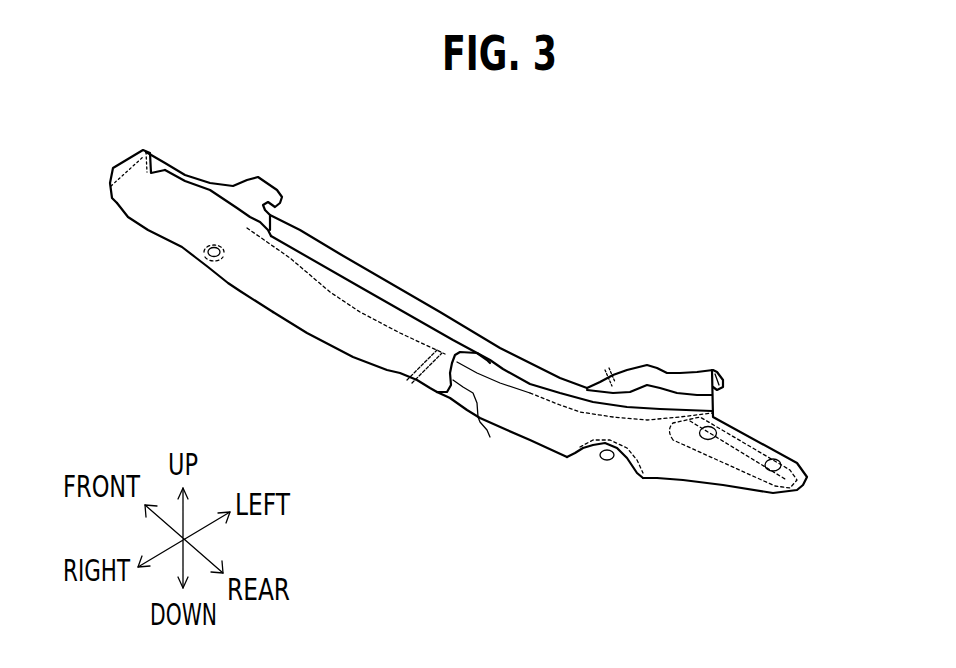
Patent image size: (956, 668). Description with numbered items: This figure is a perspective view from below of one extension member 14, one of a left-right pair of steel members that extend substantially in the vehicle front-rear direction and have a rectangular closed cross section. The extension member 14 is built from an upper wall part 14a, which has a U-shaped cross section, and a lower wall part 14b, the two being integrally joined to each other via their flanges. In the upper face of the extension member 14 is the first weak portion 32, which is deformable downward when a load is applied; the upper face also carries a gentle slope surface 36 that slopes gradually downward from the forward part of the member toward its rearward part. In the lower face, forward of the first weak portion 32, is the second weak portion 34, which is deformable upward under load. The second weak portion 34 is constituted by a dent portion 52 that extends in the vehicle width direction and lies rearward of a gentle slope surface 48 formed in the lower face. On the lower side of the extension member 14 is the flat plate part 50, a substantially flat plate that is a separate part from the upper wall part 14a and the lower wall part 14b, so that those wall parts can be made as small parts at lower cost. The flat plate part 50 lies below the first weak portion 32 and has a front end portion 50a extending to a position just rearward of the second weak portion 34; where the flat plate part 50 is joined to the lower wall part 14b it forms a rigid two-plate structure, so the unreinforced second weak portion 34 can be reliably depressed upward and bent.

The extension member 14 is at (494, 295).
The upper wall part 14a is at (333, 253).
The lower wall part 14b is at (273, 292).
The first weak portion 32 is at (615, 387).
The second weak portion 34 is at (434, 388).
The gentle slope surface 36 is at (393, 283).
The gentle slope surface 48 is at (323, 327).
The flat plate part 50 is at (668, 455).
The front end portion 50a is at (490, 437).
The dent portion 52 is at (407, 370).